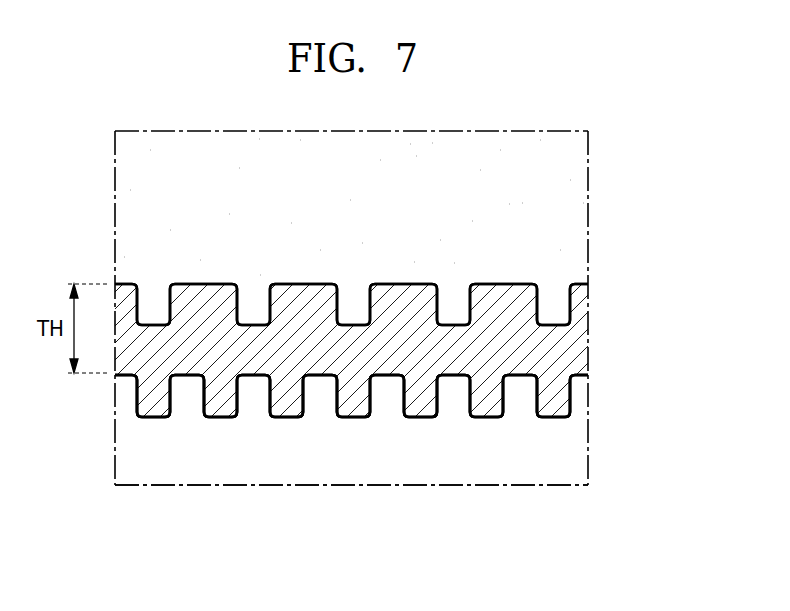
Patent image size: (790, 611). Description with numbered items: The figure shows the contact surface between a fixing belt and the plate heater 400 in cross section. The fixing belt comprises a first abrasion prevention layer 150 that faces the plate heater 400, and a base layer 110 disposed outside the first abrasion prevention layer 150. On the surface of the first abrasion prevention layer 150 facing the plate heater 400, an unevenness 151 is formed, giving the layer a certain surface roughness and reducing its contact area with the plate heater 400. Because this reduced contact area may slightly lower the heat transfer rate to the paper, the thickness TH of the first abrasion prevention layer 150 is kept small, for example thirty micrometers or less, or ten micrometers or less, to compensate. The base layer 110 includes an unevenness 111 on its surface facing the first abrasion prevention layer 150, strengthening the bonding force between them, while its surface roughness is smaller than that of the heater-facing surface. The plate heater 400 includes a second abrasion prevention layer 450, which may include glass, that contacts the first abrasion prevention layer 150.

The plate heater 400 is at (596, 230).
The second abrasion prevention layer 450 is at (570, 180).
The first abrasion prevention layer 150 is at (565, 355).
The unevenness 151 is at (545, 315).
The unevenness 111 is at (520, 395).
The base layer 110 is at (570, 441).